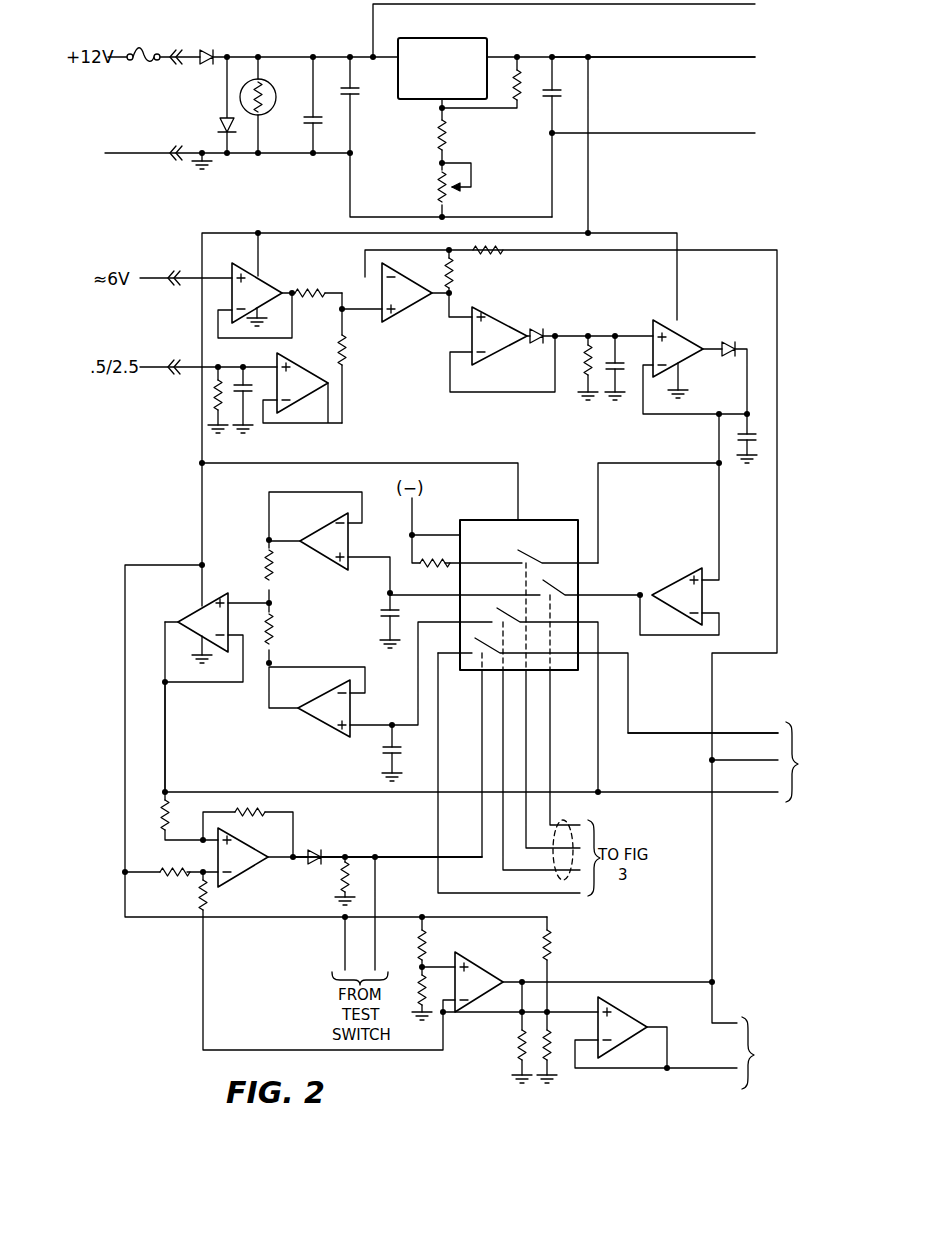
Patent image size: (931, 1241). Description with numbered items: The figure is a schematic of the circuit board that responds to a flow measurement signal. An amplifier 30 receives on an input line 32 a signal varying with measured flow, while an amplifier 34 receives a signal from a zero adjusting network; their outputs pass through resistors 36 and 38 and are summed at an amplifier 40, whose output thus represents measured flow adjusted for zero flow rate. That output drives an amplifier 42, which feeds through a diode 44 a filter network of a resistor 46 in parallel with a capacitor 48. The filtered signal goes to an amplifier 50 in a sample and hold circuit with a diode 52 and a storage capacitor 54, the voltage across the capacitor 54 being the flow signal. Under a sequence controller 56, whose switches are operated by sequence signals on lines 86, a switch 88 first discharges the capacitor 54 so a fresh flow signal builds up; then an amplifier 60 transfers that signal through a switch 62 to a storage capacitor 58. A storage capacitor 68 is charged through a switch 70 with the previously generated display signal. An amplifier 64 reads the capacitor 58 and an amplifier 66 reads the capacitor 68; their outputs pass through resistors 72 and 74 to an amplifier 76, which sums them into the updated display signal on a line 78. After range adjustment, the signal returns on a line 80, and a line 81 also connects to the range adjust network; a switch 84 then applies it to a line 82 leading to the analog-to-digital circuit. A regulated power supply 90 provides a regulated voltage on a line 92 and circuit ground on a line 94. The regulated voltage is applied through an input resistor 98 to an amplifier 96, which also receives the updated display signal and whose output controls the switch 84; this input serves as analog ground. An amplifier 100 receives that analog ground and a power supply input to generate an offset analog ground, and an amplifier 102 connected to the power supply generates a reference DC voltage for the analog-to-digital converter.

The amplifier 30 is at (290, 364).
The input line 32 is at (212, 366).
The amplifier 34 is at (283, 288).
The resistor 36 is at (345, 356).
The resistor 38 is at (320, 288).
The amplifier 40 is at (410, 285).
The amplifier 42 is at (498, 324).
The diode 44 is at (540, 324).
The resistor 46 is at (580, 364).
The capacitor 48 is at (616, 346).
The amplifier 50 is at (686, 340).
The diode 52 is at (736, 343).
The storage capacitor 54 is at (754, 432).
The sequence controller 56 is at (562, 514).
The storage capacitor 58 is at (380, 618).
The amplifier 60 is at (660, 590).
The switch 62 is at (564, 584).
The amplifier 64 is at (330, 525).
The amplifier 66 is at (332, 696).
The storage capacitor 68 is at (382, 755).
The switch 70 is at (495, 604).
The resistor 72 is at (276, 570).
The resistor 74 is at (276, 630).
The amplifier 76 is at (186, 610).
The line 78 is at (165, 735).
The line 80 is at (745, 734).
The line 81 is at (745, 762).
The line 82 is at (438, 832).
The switch 84 is at (474, 637).
The lines 86 is at (564, 827).
The switch 88 is at (526, 558).
The regulated power supply 90 is at (474, 38).
The line 92 is at (672, 57).
The line 94 is at (663, 133).
The amplifier 96 is at (252, 870).
The input resistor 98 is at (186, 876).
The amplifier 100 is at (488, 970).
The amplifier 102 is at (628, 1012).